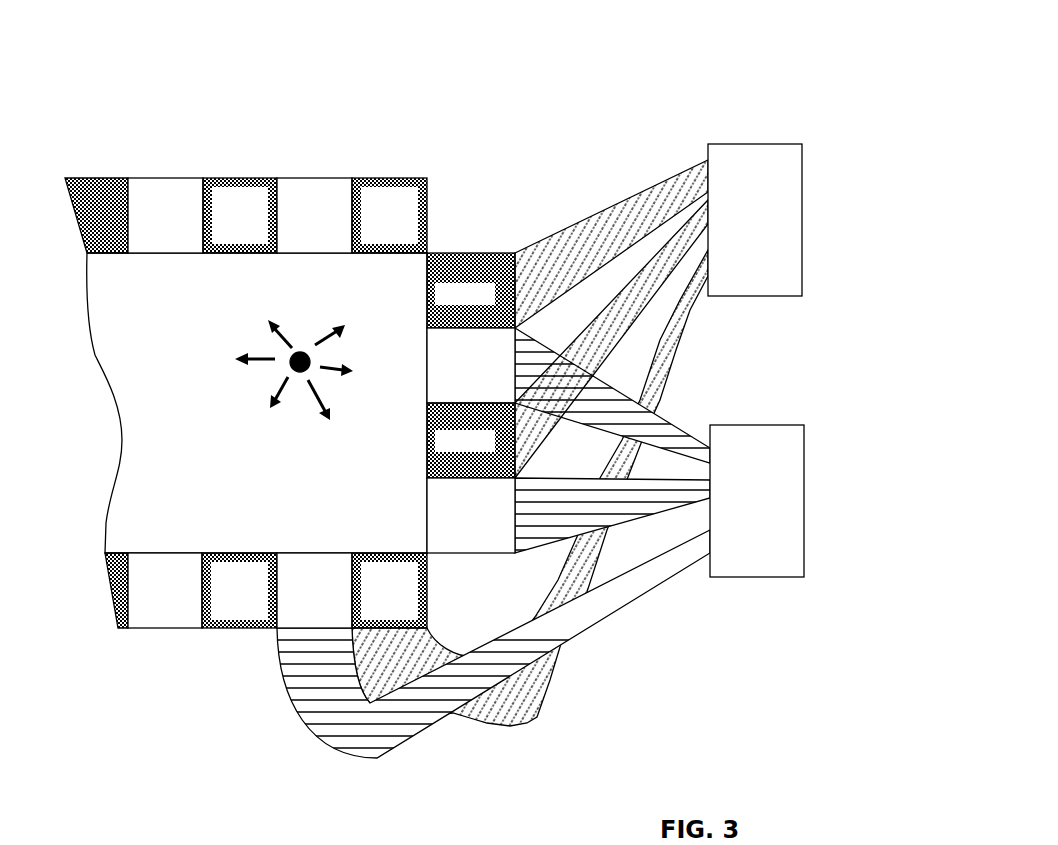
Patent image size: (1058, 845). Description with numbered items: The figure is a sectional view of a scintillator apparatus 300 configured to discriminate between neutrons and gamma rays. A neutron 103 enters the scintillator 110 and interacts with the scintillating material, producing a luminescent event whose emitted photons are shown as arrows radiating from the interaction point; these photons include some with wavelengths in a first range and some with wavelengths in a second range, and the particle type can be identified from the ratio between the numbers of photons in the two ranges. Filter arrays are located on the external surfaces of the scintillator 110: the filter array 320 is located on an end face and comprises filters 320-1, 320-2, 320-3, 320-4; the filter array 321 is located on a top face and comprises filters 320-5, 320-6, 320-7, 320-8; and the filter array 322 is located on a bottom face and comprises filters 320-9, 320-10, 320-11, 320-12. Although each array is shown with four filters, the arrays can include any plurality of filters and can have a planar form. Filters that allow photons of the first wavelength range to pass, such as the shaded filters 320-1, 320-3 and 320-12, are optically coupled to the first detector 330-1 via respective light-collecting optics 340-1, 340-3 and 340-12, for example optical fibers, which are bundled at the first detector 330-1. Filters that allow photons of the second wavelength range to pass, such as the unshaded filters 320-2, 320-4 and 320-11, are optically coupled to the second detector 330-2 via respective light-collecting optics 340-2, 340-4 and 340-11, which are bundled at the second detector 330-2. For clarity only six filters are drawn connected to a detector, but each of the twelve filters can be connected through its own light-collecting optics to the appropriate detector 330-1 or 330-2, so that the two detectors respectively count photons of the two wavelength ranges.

The scintillator apparatus 300 is at (607, 44).
The scintillator 110 is at (106, 517).
The neutron 103 is at (300, 372).
The filter array 320 is at (475, 366).
The filter array 321 is at (246, 186).
The filter array 322 is at (266, 629).
The filter 320-1 is at (471, 290).
The filter 320-2 is at (471, 365).
The filter 320-3 is at (471, 440).
The filter 320-4 is at (471, 515).
The filter 320-5 is at (165, 215).
The filter 320-6 is at (240, 215).
The filter 320-7 is at (314, 215).
The filter 320-8 is at (389, 215).
The filter 320-9 is at (165, 590).
The filter 320-10 is at (239, 590).
The filter 320-11 is at (314, 590).
The filter 320-12 is at (389, 590).
The first detector 330-1 is at (755, 220).
The second detector 330-2 is at (757, 501).
The light-collecting optics 340-1 is at (667, 180).
The light-collecting optics 340-2 is at (665, 422).
The light-collecting optics 340-3 is at (637, 310).
The light-collecting optics 340-4 is at (543, 545).
The light-collecting optics 340-11 is at (608, 617).
The light-collecting optics 340-12 is at (547, 697).